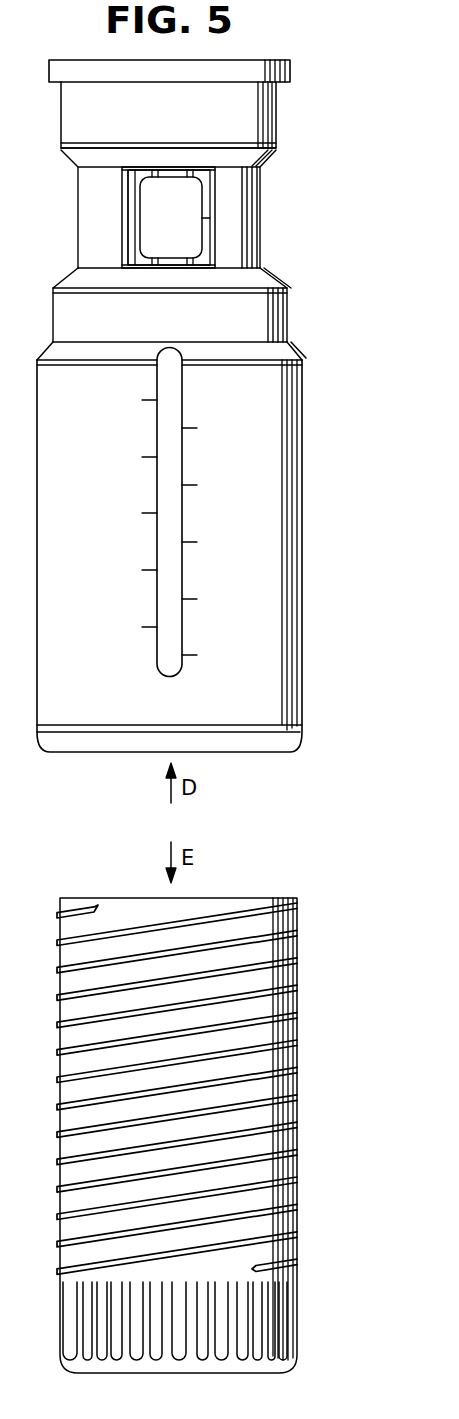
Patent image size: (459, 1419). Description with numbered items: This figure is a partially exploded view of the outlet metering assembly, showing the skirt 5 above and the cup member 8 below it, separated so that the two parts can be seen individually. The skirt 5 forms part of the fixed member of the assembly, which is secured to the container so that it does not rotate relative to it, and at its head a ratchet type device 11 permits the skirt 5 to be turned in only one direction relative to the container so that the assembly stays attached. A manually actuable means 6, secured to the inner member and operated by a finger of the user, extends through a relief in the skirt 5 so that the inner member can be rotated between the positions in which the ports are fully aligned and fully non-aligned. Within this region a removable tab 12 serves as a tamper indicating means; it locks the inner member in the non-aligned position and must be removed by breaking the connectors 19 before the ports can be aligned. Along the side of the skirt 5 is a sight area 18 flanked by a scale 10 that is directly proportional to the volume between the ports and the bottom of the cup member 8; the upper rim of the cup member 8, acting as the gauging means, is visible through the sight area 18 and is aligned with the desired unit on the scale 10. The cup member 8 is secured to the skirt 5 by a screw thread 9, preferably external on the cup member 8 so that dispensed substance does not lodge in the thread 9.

The skirt 5 is at (265, 470).
The manually actuable means 6 is at (127, 218).
The cup member 8 is at (260, 1308).
The screw thread 9 is at (297, 1175).
The scale 10 is at (228, 517).
The ratchet type device 11 is at (290, 70).
The removable tab 12 is at (167, 185).
The sight area 18 is at (182, 627).
The connectors 19 is at (190, 173).